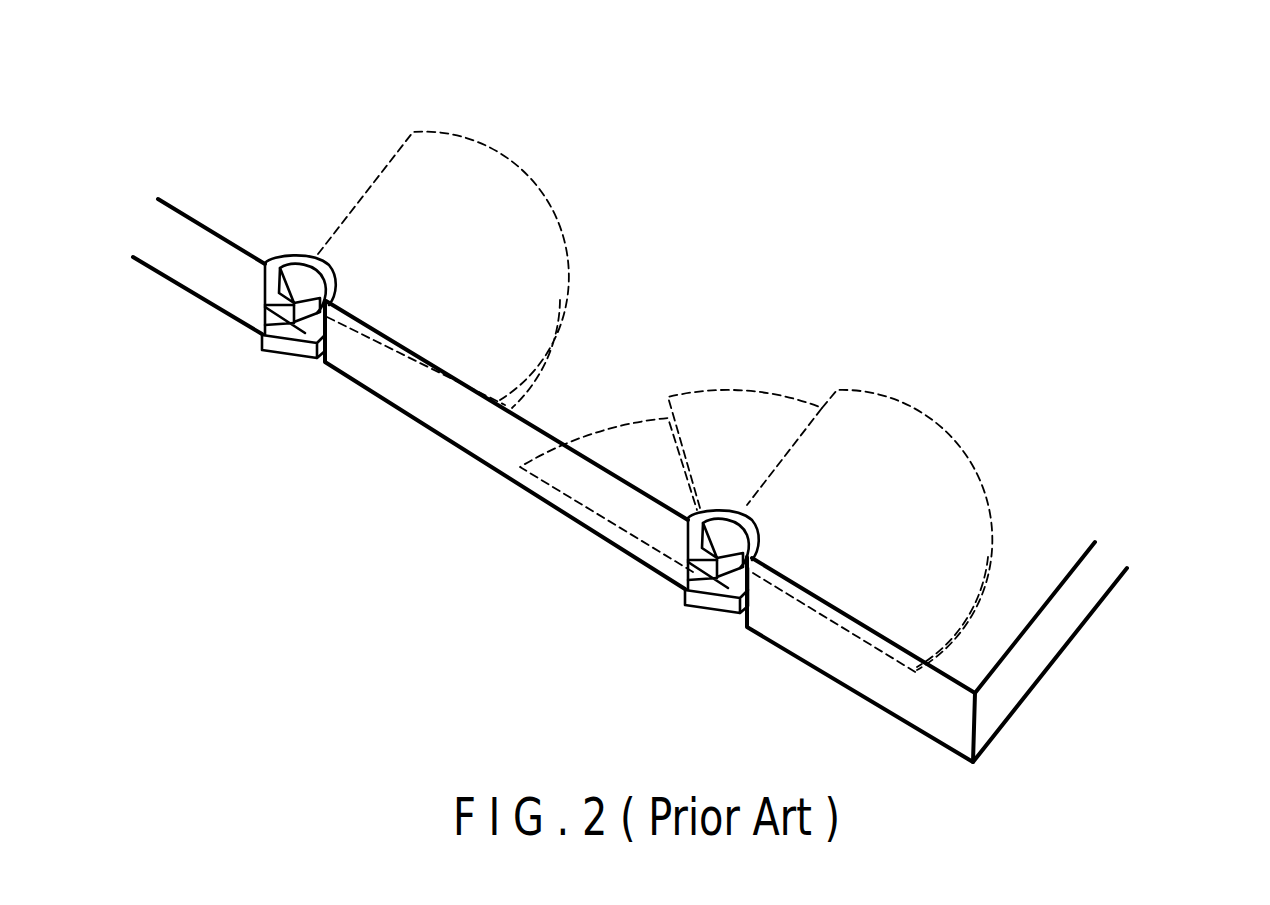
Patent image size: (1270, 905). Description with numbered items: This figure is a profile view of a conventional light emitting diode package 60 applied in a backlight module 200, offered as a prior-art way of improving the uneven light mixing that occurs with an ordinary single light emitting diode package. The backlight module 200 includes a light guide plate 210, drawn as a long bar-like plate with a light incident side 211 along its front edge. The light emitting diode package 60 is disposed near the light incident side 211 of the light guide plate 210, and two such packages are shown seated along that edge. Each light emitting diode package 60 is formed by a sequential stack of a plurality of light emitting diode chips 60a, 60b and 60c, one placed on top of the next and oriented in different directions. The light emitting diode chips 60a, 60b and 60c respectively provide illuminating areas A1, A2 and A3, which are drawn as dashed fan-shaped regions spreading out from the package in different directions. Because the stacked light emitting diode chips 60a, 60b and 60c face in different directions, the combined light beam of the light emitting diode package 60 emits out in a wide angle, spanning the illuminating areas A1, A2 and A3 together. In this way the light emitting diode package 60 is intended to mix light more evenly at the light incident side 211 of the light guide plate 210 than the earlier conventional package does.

The backlight module 200 is at (1083, 142).
The light guide plate 210 is at (1055, 617).
The light incident side 211 is at (188, 265).
The light emitting diode package 60 is at (302, 366).
The light emitting diode chip 60a is at (713, 605).
The light emitting diode chip 60b is at (691, 571).
The light emitting diode chip 60c is at (691, 535).
The illuminating area A1 is at (627, 435).
The illuminating area A2 is at (753, 418).
The illuminating area A3 is at (930, 452).